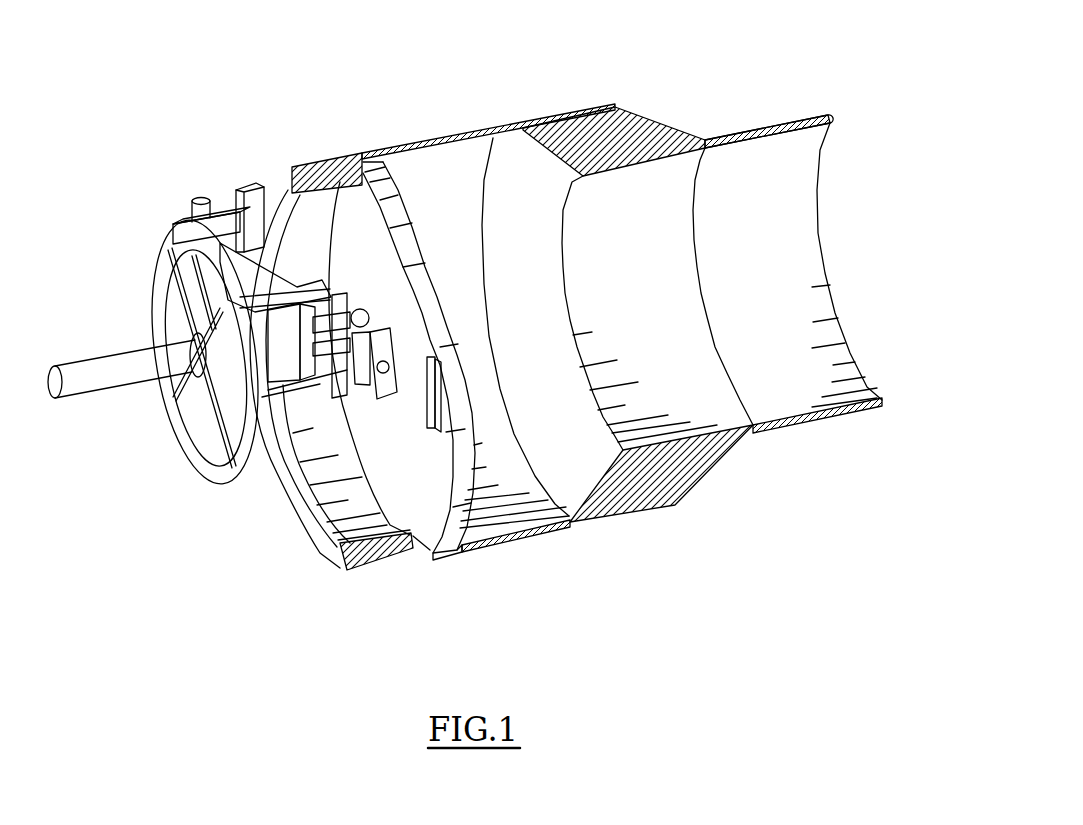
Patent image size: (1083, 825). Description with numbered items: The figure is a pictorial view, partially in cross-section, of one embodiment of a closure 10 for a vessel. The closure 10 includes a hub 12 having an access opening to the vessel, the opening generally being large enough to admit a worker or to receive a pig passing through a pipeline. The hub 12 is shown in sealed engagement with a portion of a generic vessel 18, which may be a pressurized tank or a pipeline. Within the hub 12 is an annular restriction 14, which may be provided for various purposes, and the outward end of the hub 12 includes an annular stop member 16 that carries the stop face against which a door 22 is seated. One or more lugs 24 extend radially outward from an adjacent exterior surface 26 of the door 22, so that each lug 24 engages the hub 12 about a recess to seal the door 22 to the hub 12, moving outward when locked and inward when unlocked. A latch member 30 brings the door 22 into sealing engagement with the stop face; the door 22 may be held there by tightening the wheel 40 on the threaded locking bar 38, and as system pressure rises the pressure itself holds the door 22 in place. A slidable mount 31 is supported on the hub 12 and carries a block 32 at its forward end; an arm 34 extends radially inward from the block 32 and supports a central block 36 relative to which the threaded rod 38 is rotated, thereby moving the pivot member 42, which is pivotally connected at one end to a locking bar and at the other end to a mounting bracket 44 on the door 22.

The closure 10 is at (118, 214).
The hub 12 is at (470, 136).
The annular restriction 14 is at (612, 126).
The annular stop member 16 is at (323, 173).
The vessel 18 is at (780, 121).
The door 22 is at (418, 436).
The lug 24 is at (457, 387).
The exterior surface 26 is at (457, 462).
The latch member 30 is at (168, 460).
The slidable mount 31 is at (250, 190).
The block 32 is at (220, 217).
The arm 34 is at (267, 263).
The central block 36 is at (287, 340).
The threaded locking bar 38 is at (105, 382).
The wheel 40 is at (227, 480).
The pivot member 42 is at (366, 320).
The mounting bracket 44 is at (388, 347).